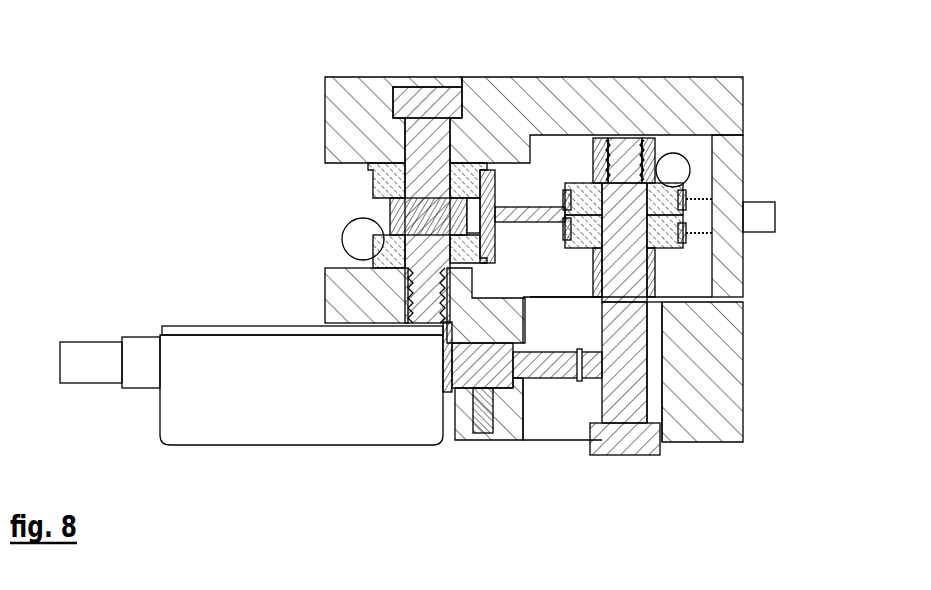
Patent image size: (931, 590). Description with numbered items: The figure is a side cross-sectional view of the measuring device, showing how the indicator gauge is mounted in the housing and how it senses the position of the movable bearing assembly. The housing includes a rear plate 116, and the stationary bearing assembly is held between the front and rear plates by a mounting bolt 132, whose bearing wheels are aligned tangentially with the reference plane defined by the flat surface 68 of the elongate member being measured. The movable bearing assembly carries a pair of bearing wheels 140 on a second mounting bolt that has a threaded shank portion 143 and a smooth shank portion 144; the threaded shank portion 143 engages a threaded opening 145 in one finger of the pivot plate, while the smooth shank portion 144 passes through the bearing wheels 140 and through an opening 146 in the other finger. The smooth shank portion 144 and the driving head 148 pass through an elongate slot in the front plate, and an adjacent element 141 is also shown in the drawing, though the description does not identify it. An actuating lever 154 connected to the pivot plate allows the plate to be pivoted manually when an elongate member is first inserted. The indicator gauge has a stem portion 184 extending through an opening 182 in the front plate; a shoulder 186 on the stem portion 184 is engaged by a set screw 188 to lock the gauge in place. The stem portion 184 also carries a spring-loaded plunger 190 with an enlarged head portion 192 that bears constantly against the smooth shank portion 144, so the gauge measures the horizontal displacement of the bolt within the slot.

The rear plate 116 is at (713, 102).
The mounting bolt 132 is at (427, 88).
The clamping block 141 is at (570, 209).
The threaded opening 145 is at (608, 142).
The threaded shank portion 143 is at (622, 145).
The smooth shank portion 144 is at (647, 357).
The bearing wheels 140 is at (684, 197).
The actuating lever 154 is at (762, 217).
The flat surface 68 is at (477, 215).
The stem portion 184 is at (538, 360).
The enlarged head portion 192 is at (592, 357).
The spring-loaded plunger 190 is at (557, 378).
The opening 182 is at (520, 380).
The set screw 188 is at (485, 425).
The shoulder 186 is at (468, 380).
The opening 146 is at (653, 382).
The driving head 148 is at (625, 453).